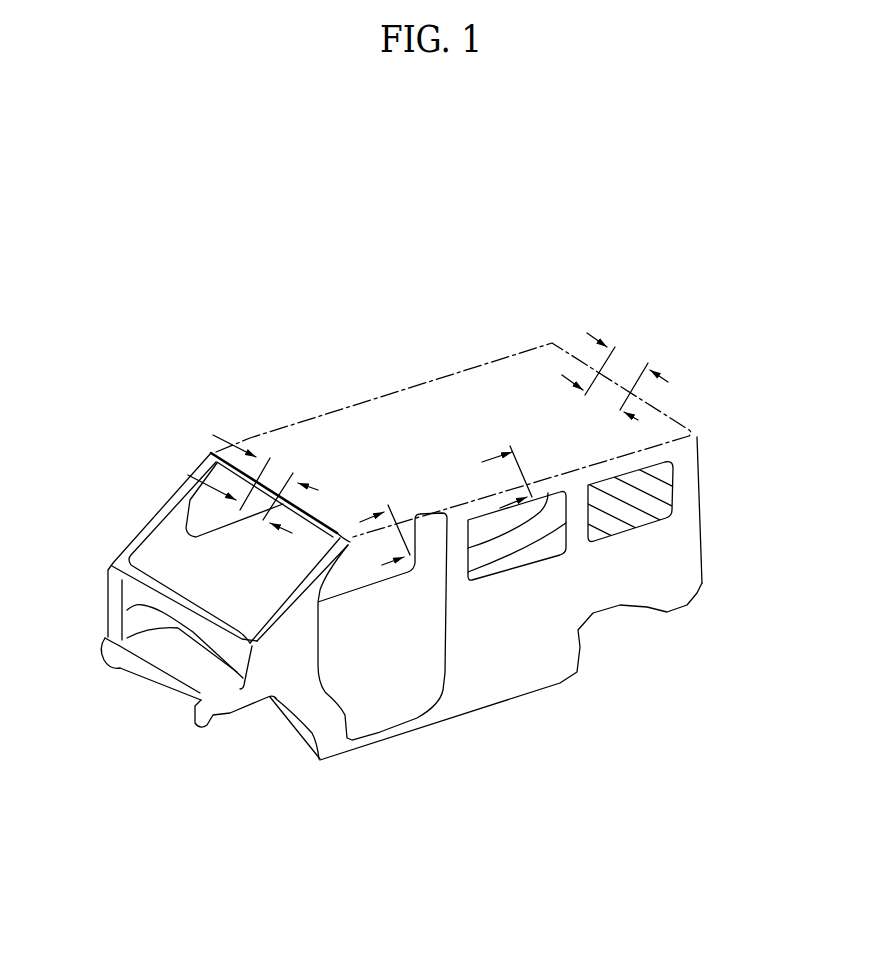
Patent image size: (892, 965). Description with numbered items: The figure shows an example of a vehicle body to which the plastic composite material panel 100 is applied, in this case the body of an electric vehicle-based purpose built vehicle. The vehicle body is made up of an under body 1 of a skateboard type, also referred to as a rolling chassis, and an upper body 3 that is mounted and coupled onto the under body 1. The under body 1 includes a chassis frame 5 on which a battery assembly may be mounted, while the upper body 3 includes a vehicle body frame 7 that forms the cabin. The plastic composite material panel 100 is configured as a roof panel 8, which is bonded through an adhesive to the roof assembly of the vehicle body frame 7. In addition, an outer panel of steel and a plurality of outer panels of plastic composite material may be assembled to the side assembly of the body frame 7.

The plastic composite material panel 100 is at (437, 360).
The roof panel 8 is at (313, 413).
The chassis frame 5 is at (262, 727).
The under body 1 is at (297, 755).
The vehicle body frame 7 is at (442, 532).
The upper body 3 is at (704, 517).